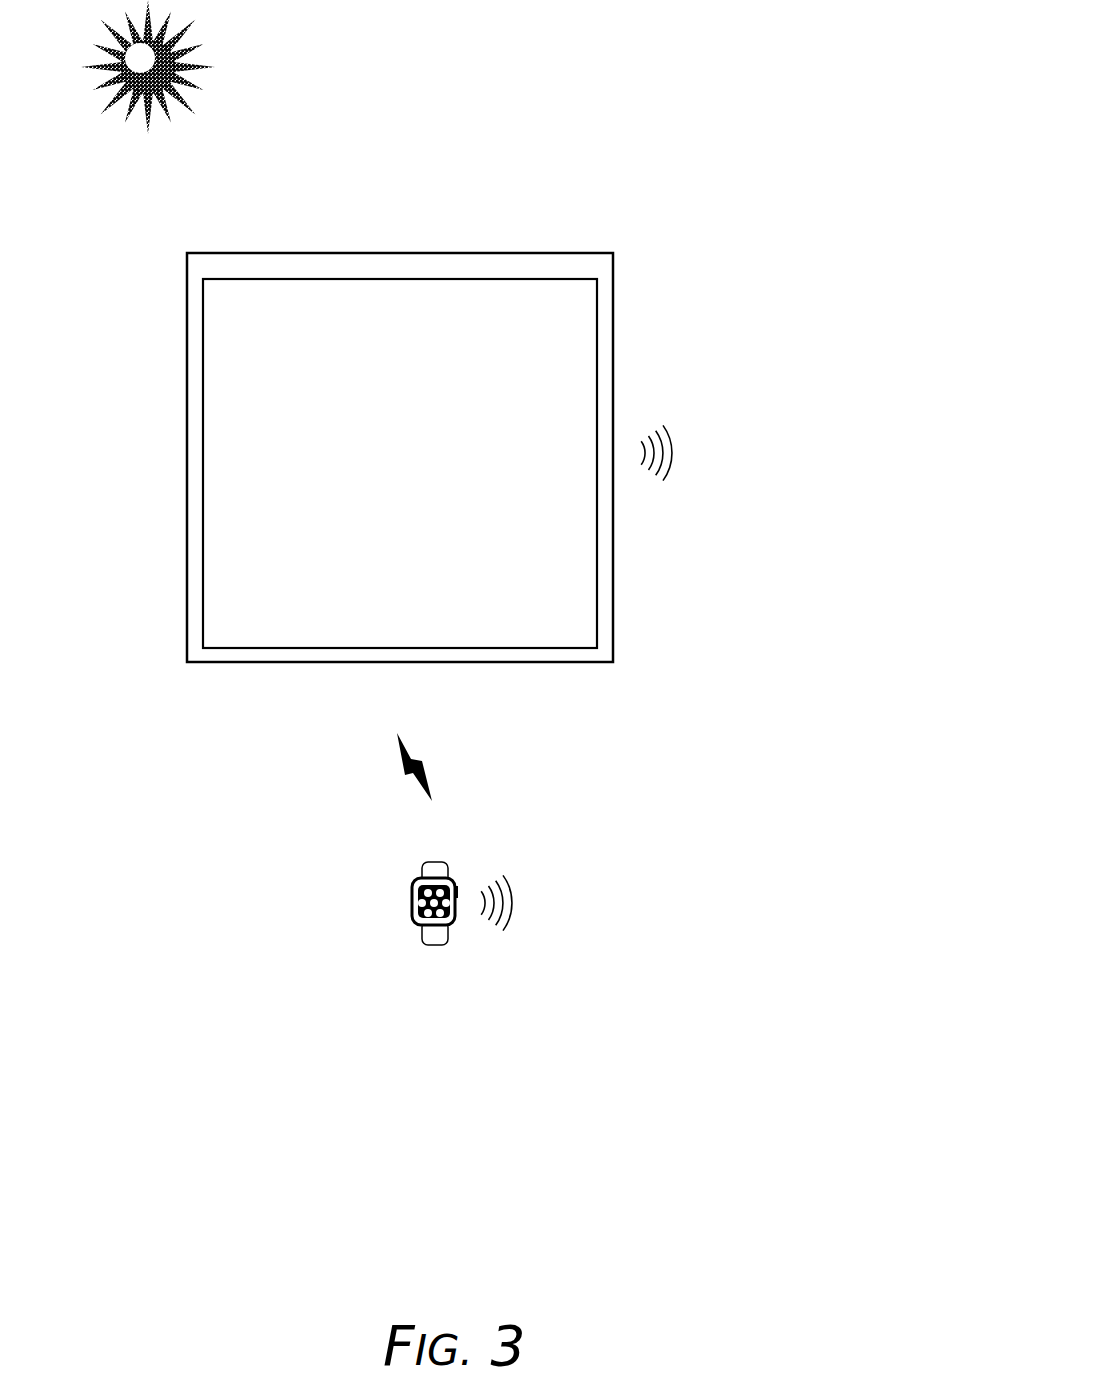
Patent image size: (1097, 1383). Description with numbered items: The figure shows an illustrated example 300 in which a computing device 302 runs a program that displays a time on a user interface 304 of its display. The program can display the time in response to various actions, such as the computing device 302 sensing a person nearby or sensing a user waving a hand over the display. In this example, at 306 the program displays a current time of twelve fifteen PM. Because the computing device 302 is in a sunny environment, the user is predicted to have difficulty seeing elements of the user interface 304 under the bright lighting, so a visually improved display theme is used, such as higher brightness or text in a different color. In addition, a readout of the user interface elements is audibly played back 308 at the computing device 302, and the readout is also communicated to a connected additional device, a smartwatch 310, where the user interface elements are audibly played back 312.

The illustrated example 300 is at (749, 62).
The computing device 302 is at (262, 253).
The user interface 304 is at (378, 279).
The displayed current time 306 is at (317, 367).
The audible playback at the computing device 308 is at (818, 411).
The smartwatch 310 is at (422, 868).
The audible playback by the smartwatch 312 is at (678, 863).